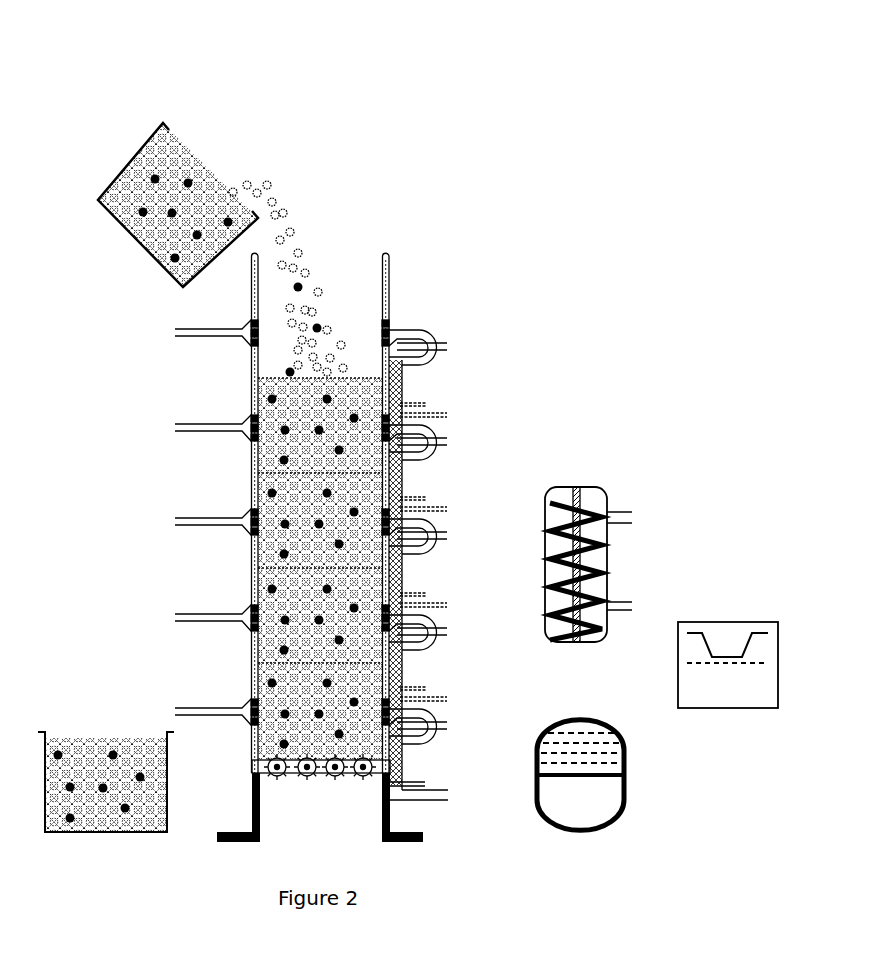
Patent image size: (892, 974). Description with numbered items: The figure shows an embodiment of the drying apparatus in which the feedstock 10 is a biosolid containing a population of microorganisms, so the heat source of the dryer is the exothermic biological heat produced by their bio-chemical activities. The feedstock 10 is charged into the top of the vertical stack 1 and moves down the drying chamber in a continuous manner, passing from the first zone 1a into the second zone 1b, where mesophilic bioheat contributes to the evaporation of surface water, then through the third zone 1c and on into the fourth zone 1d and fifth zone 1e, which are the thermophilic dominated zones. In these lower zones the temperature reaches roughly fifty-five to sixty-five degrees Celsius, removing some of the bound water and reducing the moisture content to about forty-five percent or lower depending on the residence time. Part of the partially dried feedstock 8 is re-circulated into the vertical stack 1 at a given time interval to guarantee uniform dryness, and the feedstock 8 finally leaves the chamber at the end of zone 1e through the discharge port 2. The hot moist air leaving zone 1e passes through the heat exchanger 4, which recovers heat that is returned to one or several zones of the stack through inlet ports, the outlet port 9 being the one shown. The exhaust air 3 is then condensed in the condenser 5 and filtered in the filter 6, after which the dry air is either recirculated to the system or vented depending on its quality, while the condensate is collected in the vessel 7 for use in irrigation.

The vertical stack 1 is at (355, 267).
The first zone 1a is at (312, 313).
The second zone 1b is at (320, 425).
The third zone 1c is at (320, 520).
The fourth zone 1d is at (320, 615).
The fifth zone 1e is at (320, 711).
The discharge port 2 is at (346, 779).
The exhaust air 3 is at (397, 329).
The heat exchanger 4 is at (404, 381).
The condenser 5 is at (595, 485).
The filter 6 is at (722, 619).
The storage vessel 7 is at (590, 716).
The partially dried feedstock 8 is at (91, 728).
The outlet port 9 is at (450, 791).
The feedstock 10 is at (197, 139).